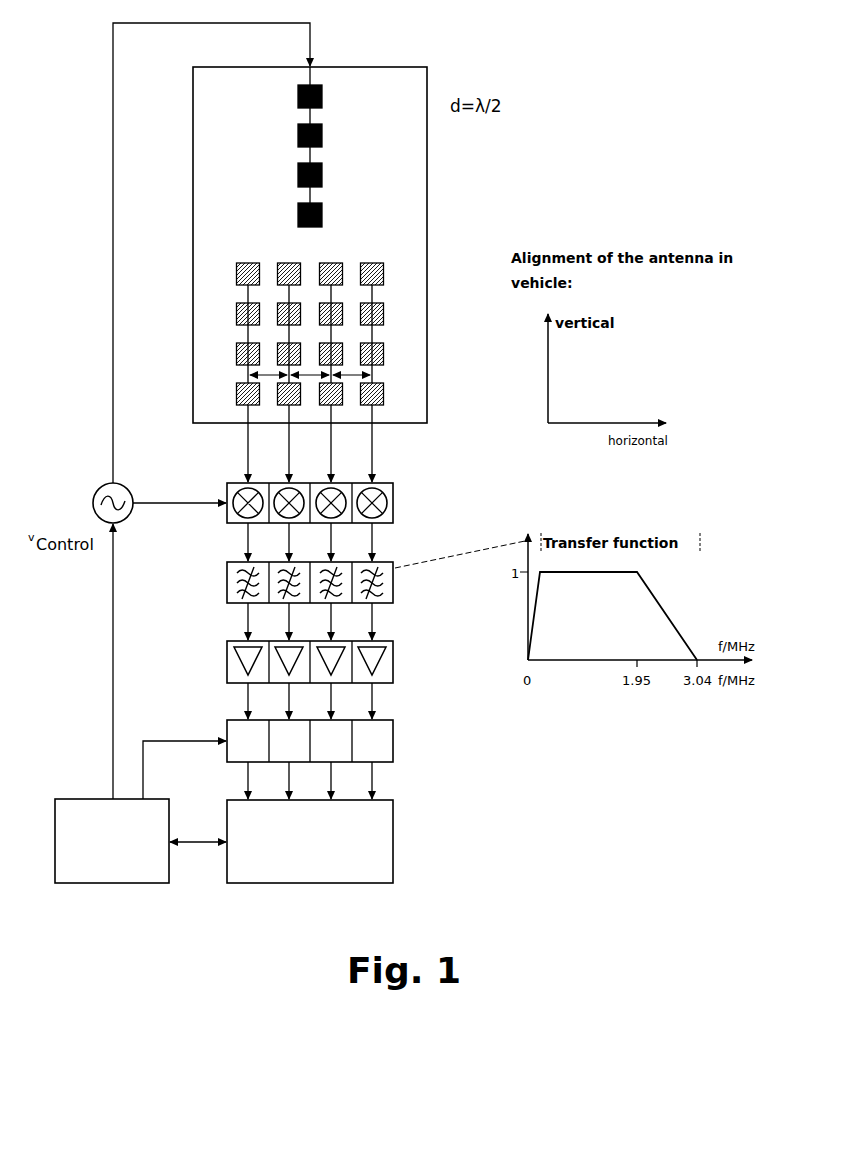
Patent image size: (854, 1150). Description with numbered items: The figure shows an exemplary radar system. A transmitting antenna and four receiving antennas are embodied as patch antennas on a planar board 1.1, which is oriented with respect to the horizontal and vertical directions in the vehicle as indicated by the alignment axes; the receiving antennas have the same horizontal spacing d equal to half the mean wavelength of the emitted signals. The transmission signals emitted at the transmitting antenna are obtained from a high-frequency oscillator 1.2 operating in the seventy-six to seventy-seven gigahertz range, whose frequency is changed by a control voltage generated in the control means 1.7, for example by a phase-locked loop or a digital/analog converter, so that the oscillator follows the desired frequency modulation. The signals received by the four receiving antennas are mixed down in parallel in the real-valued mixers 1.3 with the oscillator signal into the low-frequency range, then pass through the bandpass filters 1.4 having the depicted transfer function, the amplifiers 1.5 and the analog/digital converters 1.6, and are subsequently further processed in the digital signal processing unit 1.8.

The planar board 1.1 is at (427, 378).
The high-frequency oscillator 1.2 is at (98, 486).
The real-valued mixers 1.3 is at (393, 502).
The bandpass filters 1.4 is at (393, 582).
The amplifiers 1.5 is at (393, 662).
The analog/digital converters 1.6 is at (393, 741).
The control means 1.7 is at (74, 799).
The digital signal processing unit 1.8 is at (393, 842).